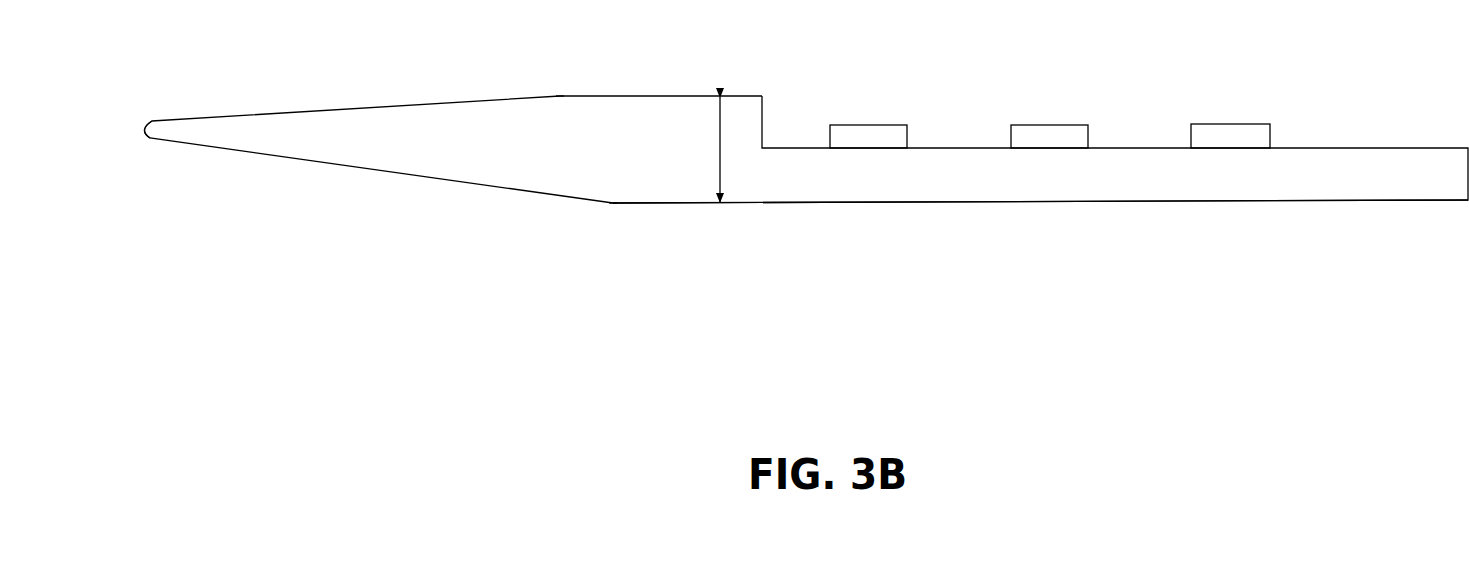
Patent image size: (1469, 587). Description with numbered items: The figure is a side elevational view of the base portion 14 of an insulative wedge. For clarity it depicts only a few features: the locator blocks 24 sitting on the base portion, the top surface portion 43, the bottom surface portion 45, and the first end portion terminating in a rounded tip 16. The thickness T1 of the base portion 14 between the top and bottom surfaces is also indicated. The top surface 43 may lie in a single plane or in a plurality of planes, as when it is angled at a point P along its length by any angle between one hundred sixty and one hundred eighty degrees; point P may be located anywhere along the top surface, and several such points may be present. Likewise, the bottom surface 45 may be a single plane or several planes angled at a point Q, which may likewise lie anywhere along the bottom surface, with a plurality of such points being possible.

The base portion 14 is at (473, 246).
The rounded tip 16 is at (163, 120).
The top surface portion 43 is at (660, 96).
The bottom surface portion 45 is at (787, 203).
The locator blocks 24 is at (866, 125).
The point P is at (559, 92).
The point Q is at (612, 206).
The thickness T1 is at (698, 149).